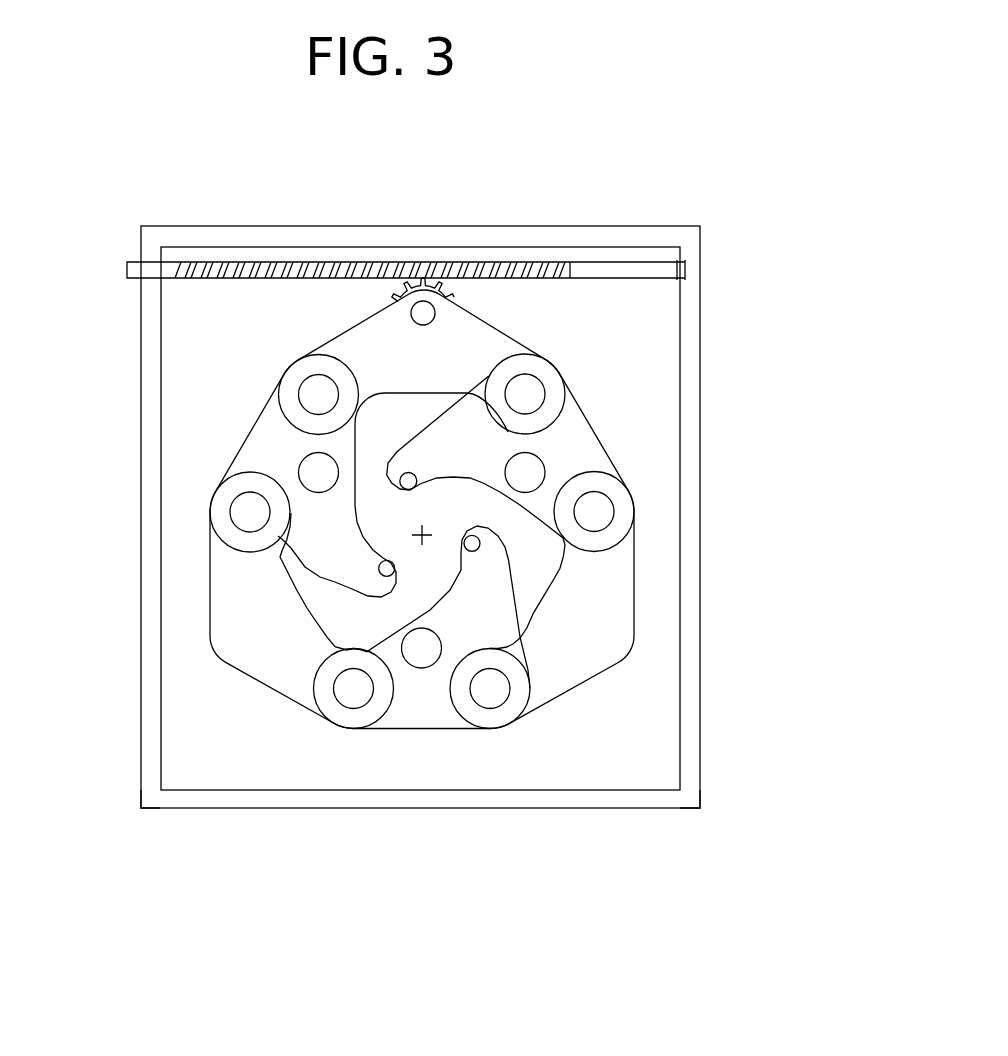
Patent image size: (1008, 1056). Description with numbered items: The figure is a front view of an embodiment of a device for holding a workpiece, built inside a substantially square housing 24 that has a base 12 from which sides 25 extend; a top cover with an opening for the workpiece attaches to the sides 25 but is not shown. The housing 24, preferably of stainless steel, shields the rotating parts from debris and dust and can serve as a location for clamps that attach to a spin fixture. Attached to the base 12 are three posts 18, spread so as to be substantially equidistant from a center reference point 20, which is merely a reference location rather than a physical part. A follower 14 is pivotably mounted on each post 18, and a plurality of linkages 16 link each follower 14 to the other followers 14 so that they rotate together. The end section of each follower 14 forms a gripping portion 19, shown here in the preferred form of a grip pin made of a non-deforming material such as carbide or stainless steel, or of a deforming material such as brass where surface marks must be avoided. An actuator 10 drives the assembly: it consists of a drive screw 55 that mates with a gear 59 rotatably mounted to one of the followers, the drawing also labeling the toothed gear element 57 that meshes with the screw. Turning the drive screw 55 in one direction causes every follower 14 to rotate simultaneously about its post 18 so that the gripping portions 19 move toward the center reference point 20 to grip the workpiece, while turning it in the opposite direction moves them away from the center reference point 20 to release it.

The actuator 10 is at (467, 498).
The base 12 is at (430, 770).
The follower 14 is at (582, 454).
The linkage 16 is at (367, 348).
The post 18 is at (318, 473).
The gripping portion 19 is at (510, 486).
The center reference point 20 is at (422, 535).
The housing 24 is at (700, 808).
The sides 25 is at (690, 637).
The drive screw 55 is at (560, 262).
The gear 57 is at (390, 302).
The gear 59 is at (425, 312).